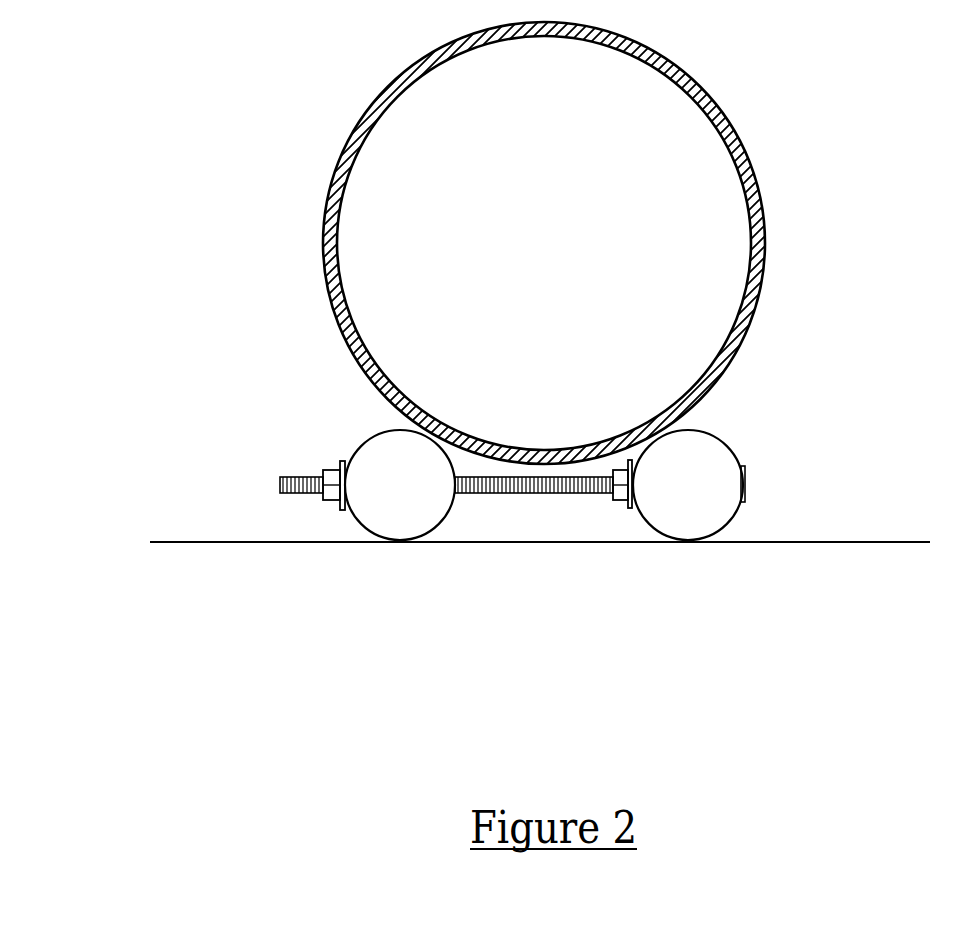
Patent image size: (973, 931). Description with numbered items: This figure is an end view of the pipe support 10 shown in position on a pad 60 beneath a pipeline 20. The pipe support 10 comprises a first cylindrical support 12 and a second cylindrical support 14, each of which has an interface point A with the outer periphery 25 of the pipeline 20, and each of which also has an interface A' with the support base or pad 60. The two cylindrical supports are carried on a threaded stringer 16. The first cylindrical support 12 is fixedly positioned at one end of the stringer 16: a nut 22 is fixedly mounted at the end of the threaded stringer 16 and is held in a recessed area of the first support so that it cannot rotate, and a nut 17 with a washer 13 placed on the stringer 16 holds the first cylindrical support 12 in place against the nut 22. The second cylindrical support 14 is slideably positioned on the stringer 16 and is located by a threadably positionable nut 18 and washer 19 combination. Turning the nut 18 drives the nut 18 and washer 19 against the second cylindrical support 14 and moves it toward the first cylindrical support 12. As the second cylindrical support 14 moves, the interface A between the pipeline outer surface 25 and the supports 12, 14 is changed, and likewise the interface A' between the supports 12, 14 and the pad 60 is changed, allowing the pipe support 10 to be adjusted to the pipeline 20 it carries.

The pipe support 10 is at (567, 502).
The first cylindrical support 12 is at (707, 520).
The washer 13 is at (628, 505).
The second cylindrical support 14 is at (380, 510).
The stringer 16 is at (493, 490).
The nut 17 is at (615, 502).
The threadably positionable nut 18 is at (323, 498).
The washer 19 is at (340, 507).
The pipeline 20 is at (700, 102).
The nut 22 is at (745, 467).
The outer periphery 25 is at (762, 197).
The pad 60 is at (252, 542).
The interface point A is at (542, 404).
The interface A' is at (585, 641).